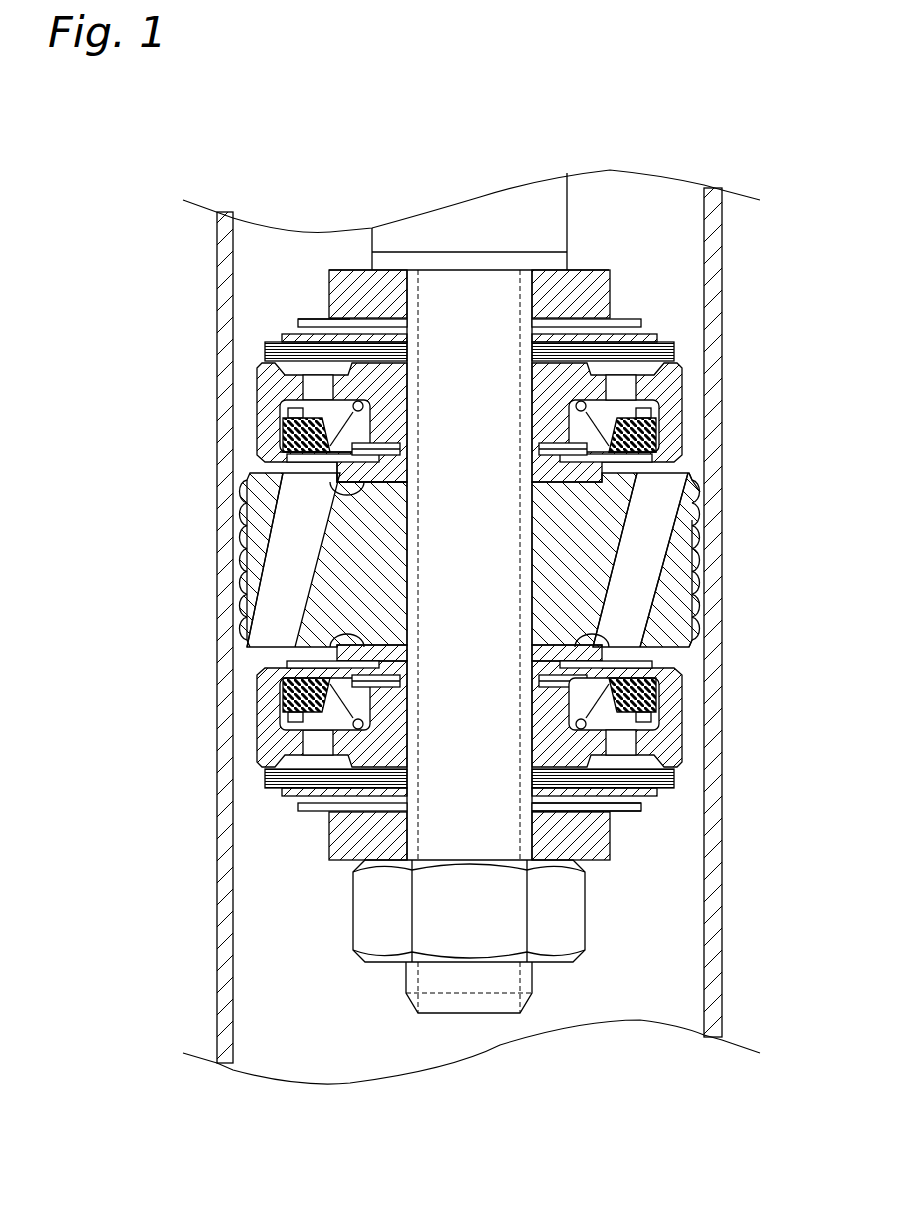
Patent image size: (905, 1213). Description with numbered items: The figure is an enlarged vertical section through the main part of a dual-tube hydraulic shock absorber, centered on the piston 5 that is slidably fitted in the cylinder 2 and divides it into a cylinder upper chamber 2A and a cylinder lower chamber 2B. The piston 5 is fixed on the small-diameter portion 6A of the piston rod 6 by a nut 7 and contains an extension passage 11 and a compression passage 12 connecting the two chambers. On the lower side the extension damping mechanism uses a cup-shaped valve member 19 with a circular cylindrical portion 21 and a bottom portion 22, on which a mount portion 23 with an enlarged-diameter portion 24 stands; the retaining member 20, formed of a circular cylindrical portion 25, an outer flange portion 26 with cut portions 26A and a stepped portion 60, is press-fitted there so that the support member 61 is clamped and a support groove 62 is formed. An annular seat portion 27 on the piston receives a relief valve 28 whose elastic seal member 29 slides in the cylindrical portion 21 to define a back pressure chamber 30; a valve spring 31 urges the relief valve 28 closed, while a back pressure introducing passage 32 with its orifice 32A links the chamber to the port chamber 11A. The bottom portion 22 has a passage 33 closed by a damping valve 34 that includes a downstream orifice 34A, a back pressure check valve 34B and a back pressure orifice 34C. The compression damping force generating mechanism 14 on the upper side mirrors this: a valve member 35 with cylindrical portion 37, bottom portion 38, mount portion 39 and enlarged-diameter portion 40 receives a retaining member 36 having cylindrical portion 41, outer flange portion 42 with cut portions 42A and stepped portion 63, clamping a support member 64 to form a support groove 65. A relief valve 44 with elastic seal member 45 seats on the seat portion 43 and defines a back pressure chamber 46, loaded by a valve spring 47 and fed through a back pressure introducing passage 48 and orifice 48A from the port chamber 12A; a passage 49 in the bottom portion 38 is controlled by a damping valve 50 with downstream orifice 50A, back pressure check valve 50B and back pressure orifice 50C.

The cylinder 2 is at (722, 225).
The cylinder upper chamber 2A is at (648, 190).
The cylinder lower chamber 2B is at (628, 1010).
The piston 5 is at (660, 548).
The piston rod 6 is at (457, 210).
The small-diameter portion 6A is at (467, 1005).
The nut 7 is at (556, 950).
The extension passage 11 is at (620, 520).
The port chamber 11A is at (700, 632).
The compression passage 12 is at (300, 578).
The port chamber 12A is at (333, 472).
The compression damping force generating mechanism 14 is at (280, 452).
The valve member 19 is at (290, 745).
The retaining member 20 is at (330, 645).
The circular cylindrical portion 21 is at (262, 690).
The bottom portion 22 is at (610, 840).
The mount portion 23 is at (283, 700).
The enlarged-diameter portion 24 is at (705, 557).
The circular cylindrical portion 25 is at (268, 780).
The outer flange portion 26 is at (337, 653).
The cut portions 26A is at (602, 650).
The seat portion 27 is at (587, 680).
The relief valve 28 is at (622, 692).
The elastic seal member 29 is at (651, 722).
The back pressure chamber 30 is at (600, 700).
The valve spring 31 is at (618, 860).
The back pressure introducing passage 32 is at (660, 660).
The back pressure introducing orifice 32A is at (659, 705).
The passage 33 is at (674, 780).
The damping valve 34 is at (610, 812).
The downstream orifice 34A is at (657, 793).
The back pressure check valve 34B is at (600, 805).
The back pressure orifice 34C is at (641, 808).
The valve member 35 is at (660, 425).
The retaining member 36 is at (650, 462).
The circular cylindrical portion 37 is at (659, 442).
The bottom portion 38 is at (641, 322).
The mount portion 39 is at (684, 375).
The enlarged-diameter portion 40 is at (609, 285).
The circular cylindrical portion 41 is at (674, 350).
The outer flange portion 42 is at (587, 452).
The cut portions 42A is at (243, 528).
The seat portion 43 is at (352, 455).
The relief valve 44 is at (300, 458).
The elastic seal member 45 is at (295, 410).
The back pressure chamber 46 is at (300, 392).
The valve spring 47 is at (262, 380).
The back pressure introducing passage 48 is at (335, 492).
The back pressure introducing orifice 48A is at (332, 446).
The passage 49 is at (258, 365).
The damping valve 50 is at (265, 350).
The downstream orifice 50A is at (300, 322).
The back pressure check valve 50B is at (307, 313).
The back pressure orifice 50C is at (280, 338).
The stepped portion 60 is at (580, 668).
The support member 61 is at (586, 722).
The support groove 62 is at (650, 600).
The stepped portion 63 is at (700, 478).
The support member 64 is at (290, 432).
The support groove 65 is at (290, 552).